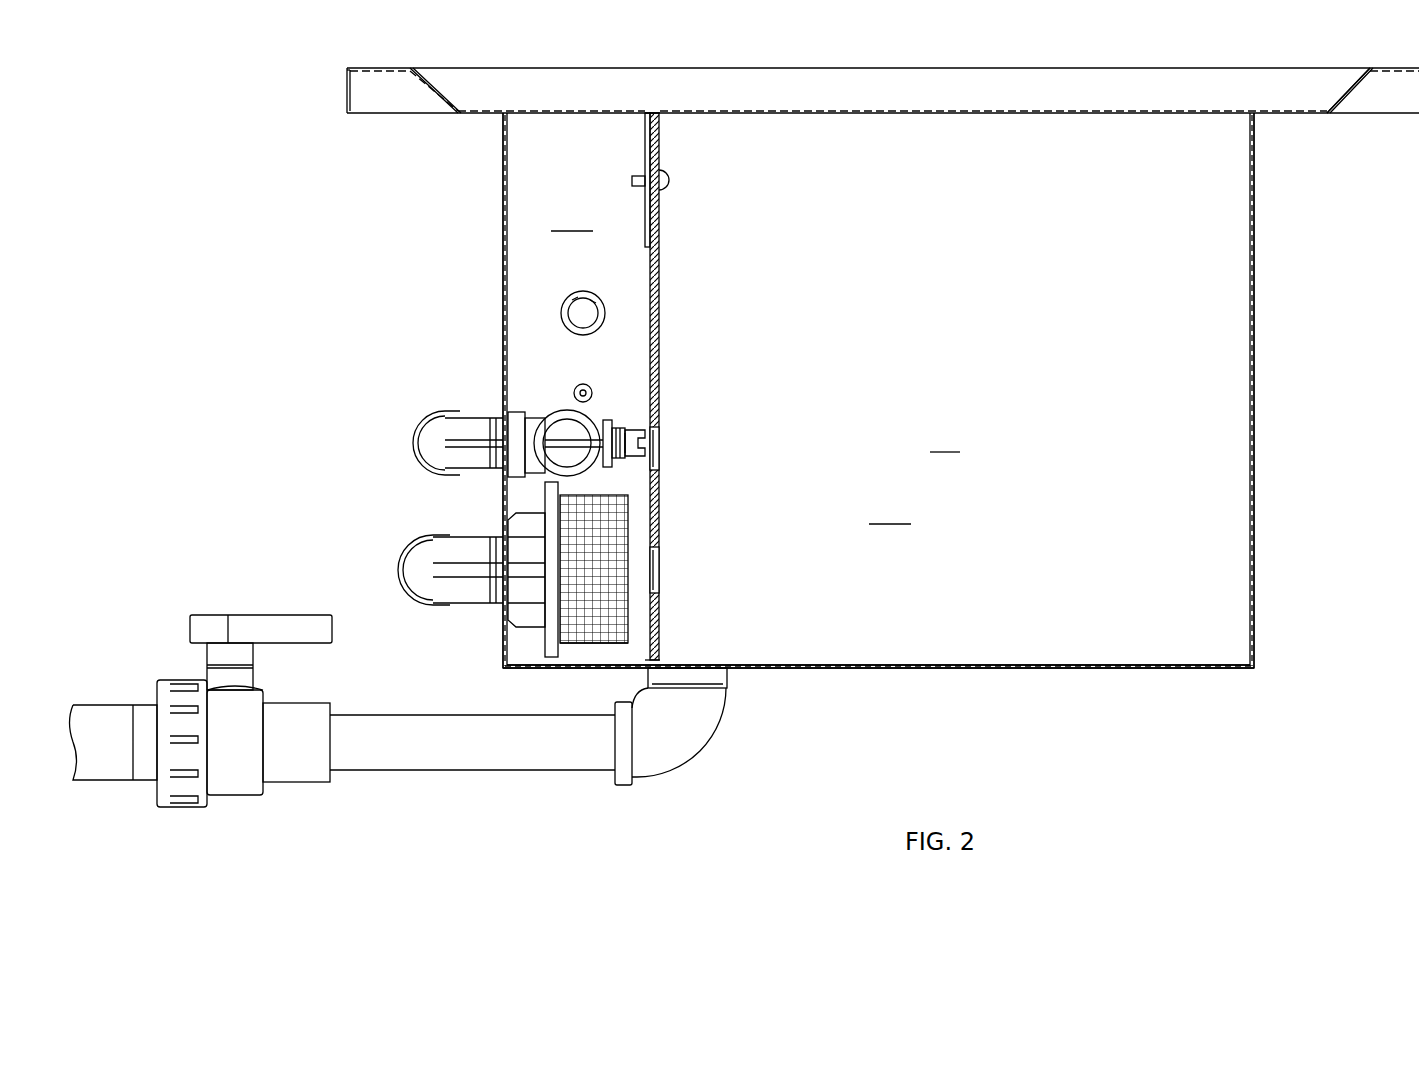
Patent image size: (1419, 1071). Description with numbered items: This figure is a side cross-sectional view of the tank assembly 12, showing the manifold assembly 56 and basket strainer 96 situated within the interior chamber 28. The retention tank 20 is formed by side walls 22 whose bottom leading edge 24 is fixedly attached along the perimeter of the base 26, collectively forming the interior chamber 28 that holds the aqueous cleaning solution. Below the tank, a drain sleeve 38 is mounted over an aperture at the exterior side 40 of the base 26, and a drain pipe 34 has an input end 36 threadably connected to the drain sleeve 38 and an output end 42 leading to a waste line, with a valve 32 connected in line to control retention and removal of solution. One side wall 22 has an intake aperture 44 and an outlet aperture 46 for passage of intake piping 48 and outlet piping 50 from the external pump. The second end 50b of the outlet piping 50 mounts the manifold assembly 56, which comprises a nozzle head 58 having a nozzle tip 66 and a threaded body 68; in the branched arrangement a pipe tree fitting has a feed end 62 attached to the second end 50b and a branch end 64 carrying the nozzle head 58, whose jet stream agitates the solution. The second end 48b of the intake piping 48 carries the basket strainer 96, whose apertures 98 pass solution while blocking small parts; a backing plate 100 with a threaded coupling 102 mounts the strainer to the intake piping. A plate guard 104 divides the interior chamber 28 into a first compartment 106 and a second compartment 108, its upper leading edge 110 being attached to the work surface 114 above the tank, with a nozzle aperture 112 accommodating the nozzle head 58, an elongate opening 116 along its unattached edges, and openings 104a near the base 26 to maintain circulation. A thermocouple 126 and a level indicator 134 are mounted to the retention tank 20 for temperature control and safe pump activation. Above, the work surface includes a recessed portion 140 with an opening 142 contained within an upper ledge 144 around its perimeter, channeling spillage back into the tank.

The tank assembly 12 is at (1198, 732).
The retention tank 20 is at (1254, 326).
The side wall 22 is at (503, 216).
The bottom leading edge 24 is at (1254, 652).
The base 26 is at (1020, 670).
The interior chamber 28 is at (945, 445).
The valve 32 is at (245, 797).
The drain pipe 34 is at (385, 772).
The input end 36 is at (550, 780).
The drain sleeve 38 is at (728, 688).
The exterior side 40 is at (910, 670).
The output end 42 is at (100, 782).
The intake aperture 44 is at (500, 582).
The outlet aperture 46 is at (497, 468).
The intake piping 48 is at (432, 540).
The second end of the intake piping 48b is at (455, 537).
The outlet piping 50 is at (500, 424).
The second end of the outlet piping 50b is at (492, 416).
The manifold assembly 56 is at (560, 420).
The nozzle head 58 is at (640, 440).
The feed end 62 is at (545, 427).
The branch end 64 is at (616, 466).
The nozzle tip 66 is at (642, 450).
The threaded body 68 is at (640, 430).
The basket strainer 96 is at (630, 532).
The apertures 98 is at (630, 615).
The backing plate 100 is at (545, 655).
The threaded coupling 102 is at (510, 627).
The plate guard 104 is at (660, 258).
The openings 104a is at (660, 578).
The first compartment 106 is at (572, 222).
The second compartment 108 is at (890, 515).
The upper leading edge 110 is at (660, 206).
The nozzle aperture 112 is at (660, 454).
The work surface 114 is at (690, 110).
The elongate opening 116 is at (660, 662).
The thermocouple 126 is at (594, 390).
The level indicator 134 is at (606, 313).
The recessed portion 140 is at (485, 110).
The opening 142 is at (920, 110).
The upper ledge 144 is at (347, 100).